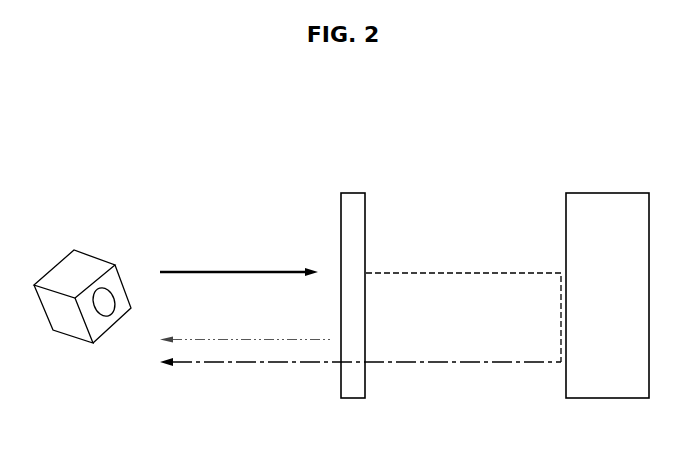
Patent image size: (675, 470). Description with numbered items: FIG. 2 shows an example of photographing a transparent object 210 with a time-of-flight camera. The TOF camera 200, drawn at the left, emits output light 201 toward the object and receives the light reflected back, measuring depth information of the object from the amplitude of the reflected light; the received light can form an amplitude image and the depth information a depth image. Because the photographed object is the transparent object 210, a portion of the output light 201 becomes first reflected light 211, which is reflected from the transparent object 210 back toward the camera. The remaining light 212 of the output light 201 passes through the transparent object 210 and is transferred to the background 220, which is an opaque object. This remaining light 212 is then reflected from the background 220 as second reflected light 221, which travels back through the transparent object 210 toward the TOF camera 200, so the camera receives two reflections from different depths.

The TOF camera 200 is at (74, 250).
The output light 201 is at (237, 270).
The transparent object 210 is at (350, 193).
The first reflected light 211 is at (246, 337).
The remaining light 212 is at (463, 273).
The background 220 is at (606, 193).
The second reflected light 221 is at (437, 365).